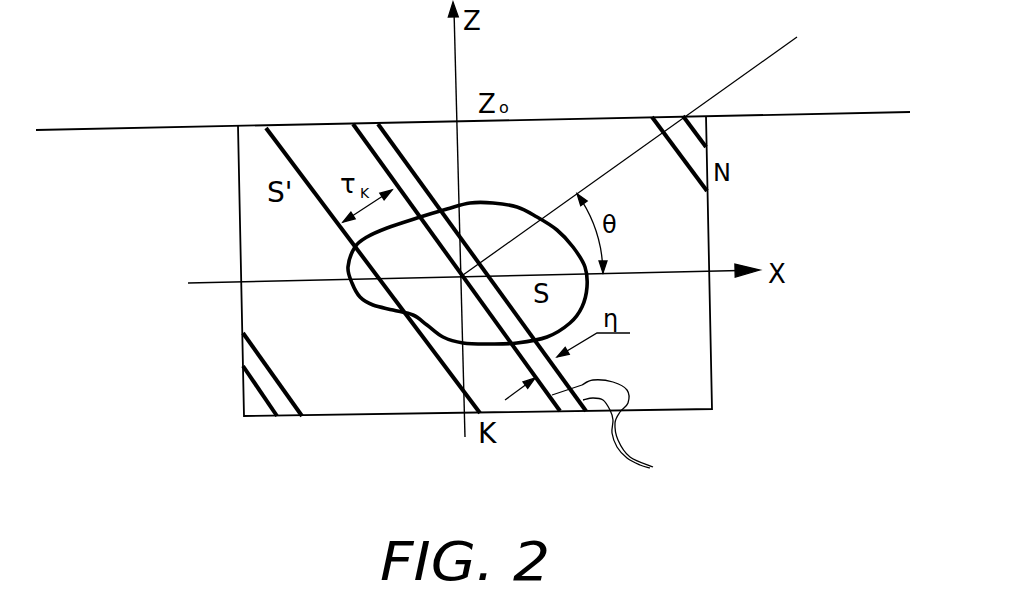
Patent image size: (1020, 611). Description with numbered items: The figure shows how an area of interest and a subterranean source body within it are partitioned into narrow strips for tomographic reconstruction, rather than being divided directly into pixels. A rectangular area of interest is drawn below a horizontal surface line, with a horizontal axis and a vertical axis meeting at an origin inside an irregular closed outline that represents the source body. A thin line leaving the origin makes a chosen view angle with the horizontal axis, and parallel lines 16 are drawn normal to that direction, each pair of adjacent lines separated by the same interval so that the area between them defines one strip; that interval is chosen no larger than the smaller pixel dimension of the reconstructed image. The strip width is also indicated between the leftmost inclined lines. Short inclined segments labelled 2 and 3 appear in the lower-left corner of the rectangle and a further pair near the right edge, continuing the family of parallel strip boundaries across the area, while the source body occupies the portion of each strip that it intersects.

The parallel lines 16 is at (625, 434).
The strip line 2 is at (263, 408).
The strip line 3 is at (277, 391).